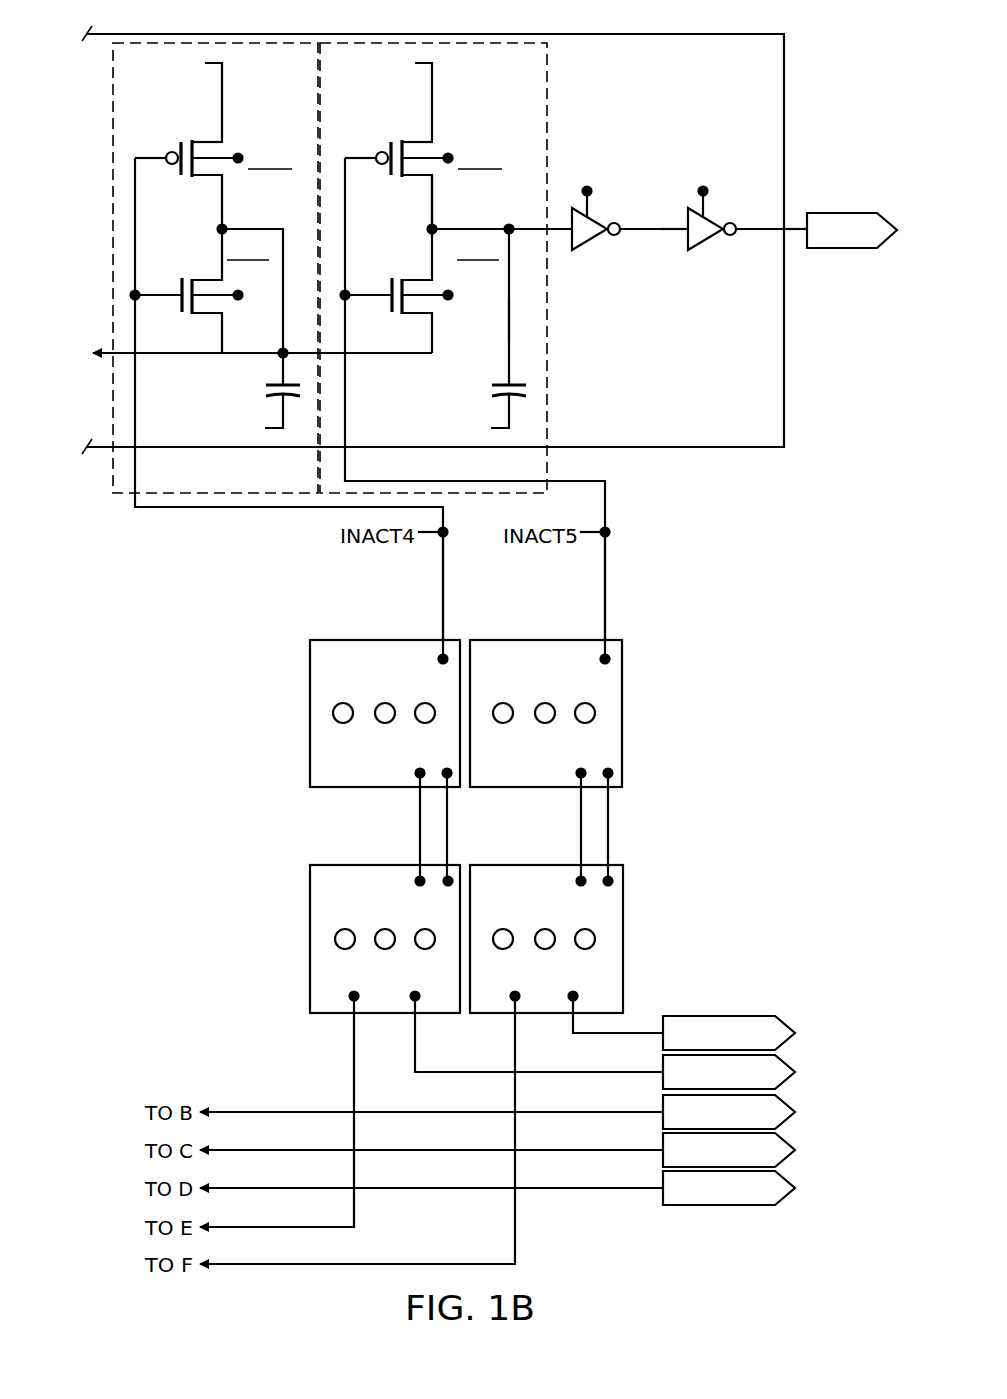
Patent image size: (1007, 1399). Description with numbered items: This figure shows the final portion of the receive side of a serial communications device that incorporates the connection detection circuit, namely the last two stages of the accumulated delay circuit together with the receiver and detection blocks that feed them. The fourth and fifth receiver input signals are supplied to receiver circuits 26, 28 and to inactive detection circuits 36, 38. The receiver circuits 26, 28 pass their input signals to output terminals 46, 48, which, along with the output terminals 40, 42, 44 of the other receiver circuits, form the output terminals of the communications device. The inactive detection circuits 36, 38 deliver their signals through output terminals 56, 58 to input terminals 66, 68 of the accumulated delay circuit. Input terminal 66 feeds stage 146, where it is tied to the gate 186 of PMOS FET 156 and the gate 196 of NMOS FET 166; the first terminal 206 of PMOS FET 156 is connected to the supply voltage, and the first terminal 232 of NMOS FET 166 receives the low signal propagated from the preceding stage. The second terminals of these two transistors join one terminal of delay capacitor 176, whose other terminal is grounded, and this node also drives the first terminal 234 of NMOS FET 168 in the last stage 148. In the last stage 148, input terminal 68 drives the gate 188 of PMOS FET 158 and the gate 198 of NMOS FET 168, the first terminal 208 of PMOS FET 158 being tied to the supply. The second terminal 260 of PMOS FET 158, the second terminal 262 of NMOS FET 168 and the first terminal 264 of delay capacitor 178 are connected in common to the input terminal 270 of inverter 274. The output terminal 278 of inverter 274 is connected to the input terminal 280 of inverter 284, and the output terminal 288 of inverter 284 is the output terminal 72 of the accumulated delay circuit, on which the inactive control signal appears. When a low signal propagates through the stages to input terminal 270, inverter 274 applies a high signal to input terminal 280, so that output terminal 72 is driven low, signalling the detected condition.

The stage 146 is at (294, 56).
The last stage 148 is at (521, 56).
The gate 186 is at (166, 156).
The first terminal 206 is at (207, 141).
The PMOS FET 156 is at (188, 180).
The gate 196 is at (160, 298).
The NMOS FET 166 is at (232, 329).
The first terminal 232 is at (167, 356).
The delay capacitor 176 is at (292, 400).
The input terminal 66 is at (137, 463).
The gate 188 is at (376, 156).
The first terminal 208 is at (417, 141).
The PMOS FET 158 is at (398, 180).
The gate 198 is at (368, 298).
The NMOS FET 168 is at (442, 329).
The first terminal 234 is at (377, 356).
The delay capacitor 178 is at (518, 400).
The input terminal 68 is at (347, 463).
The second terminal 260 is at (434, 200).
The second terminal 262 is at (431, 244).
The first terminal 264 is at (511, 325).
The input terminal 270 is at (556, 226).
The inverter 274 is at (571, 254).
The output terminal 278 is at (650, 228).
The input terminal 280 is at (682, 227).
The inverter 284 is at (687, 254).
The output terminal 288 is at (768, 228).
The output terminal 72 is at (795, 232).
The inactive detection circuit 36 is at (371, 589).
The inactive detection circuit 38 is at (544, 587).
The output terminal 56 is at (444, 576).
The output terminal 58 is at (604, 568).
The receiver circuit 26 is at (340, 1018).
The receiver circuit 28 is at (485, 1018).
The output terminal 40 is at (795, 1188).
The output terminal 42 is at (795, 1150).
The output terminal 44 is at (795, 1112).
The output terminal 46 is at (795, 1072).
The output terminal 48 is at (795, 1033).